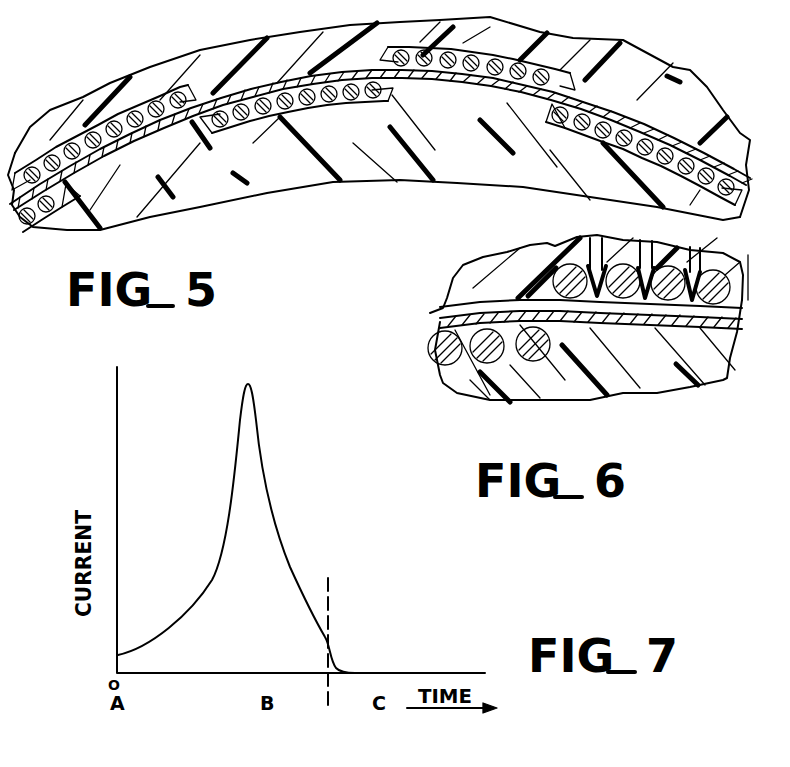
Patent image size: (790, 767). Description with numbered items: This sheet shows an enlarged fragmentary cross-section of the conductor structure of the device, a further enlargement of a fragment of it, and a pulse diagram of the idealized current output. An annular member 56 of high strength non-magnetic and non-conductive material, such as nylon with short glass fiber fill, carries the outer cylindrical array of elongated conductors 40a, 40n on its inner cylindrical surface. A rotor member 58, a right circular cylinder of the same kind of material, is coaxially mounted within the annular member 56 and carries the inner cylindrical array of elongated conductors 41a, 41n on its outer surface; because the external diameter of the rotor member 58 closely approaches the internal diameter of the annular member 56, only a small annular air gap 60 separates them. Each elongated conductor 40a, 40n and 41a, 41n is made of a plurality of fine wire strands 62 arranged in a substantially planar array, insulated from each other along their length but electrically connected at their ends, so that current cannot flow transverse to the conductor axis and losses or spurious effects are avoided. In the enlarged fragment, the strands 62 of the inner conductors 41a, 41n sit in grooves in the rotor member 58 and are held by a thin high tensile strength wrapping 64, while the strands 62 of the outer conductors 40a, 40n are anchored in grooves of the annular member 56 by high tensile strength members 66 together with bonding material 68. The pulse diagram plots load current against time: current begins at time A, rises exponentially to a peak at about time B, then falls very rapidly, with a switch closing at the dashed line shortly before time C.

In FIG. 5, the annular member 56 is at (227, 62).
In FIG. 6, the annular member 56 is at (458, 272).
In FIG. 5, the rotor member 58 is at (196, 182).
In FIG. 6, the rotor member 58 is at (598, 398).
In FIG. 5, the annular air gap 60 is at (307, 80).
In FIG. 6, the annular air gap 60 is at (447, 314).
In FIG. 5, the fine wire strands 62 is at (172, 107).
In FIG. 6, the fine wire strands 62 is at (432, 362).
In FIG. 5, the thin wrapping 64 is at (77, 205).
In FIG. 6, the thin wrapping 64 is at (523, 297).
In FIG. 6, the high tensile strength members 66 is at (545, 245).
In FIG. 6, the bonding material 68 is at (672, 371).
In FIG. 5, the elongated conductor of the outer cylindrical array 40n is at (125, 110).
In FIG. 5, the elongated conductor of the outer cylindrical array 40a is at (555, 68).
In FIG. 6, the elongated conductor of the outer cylindrical array 40a is at (739, 392).
In FIG. 5, the elongated conductor of the inner cylindrical array 41n is at (270, 122).
In FIG. 6, the elongated conductor of the inner cylindrical array 41n is at (497, 398).
In FIG. 5, the elongated conductor of the inner cylindrical array 41a is at (600, 139).